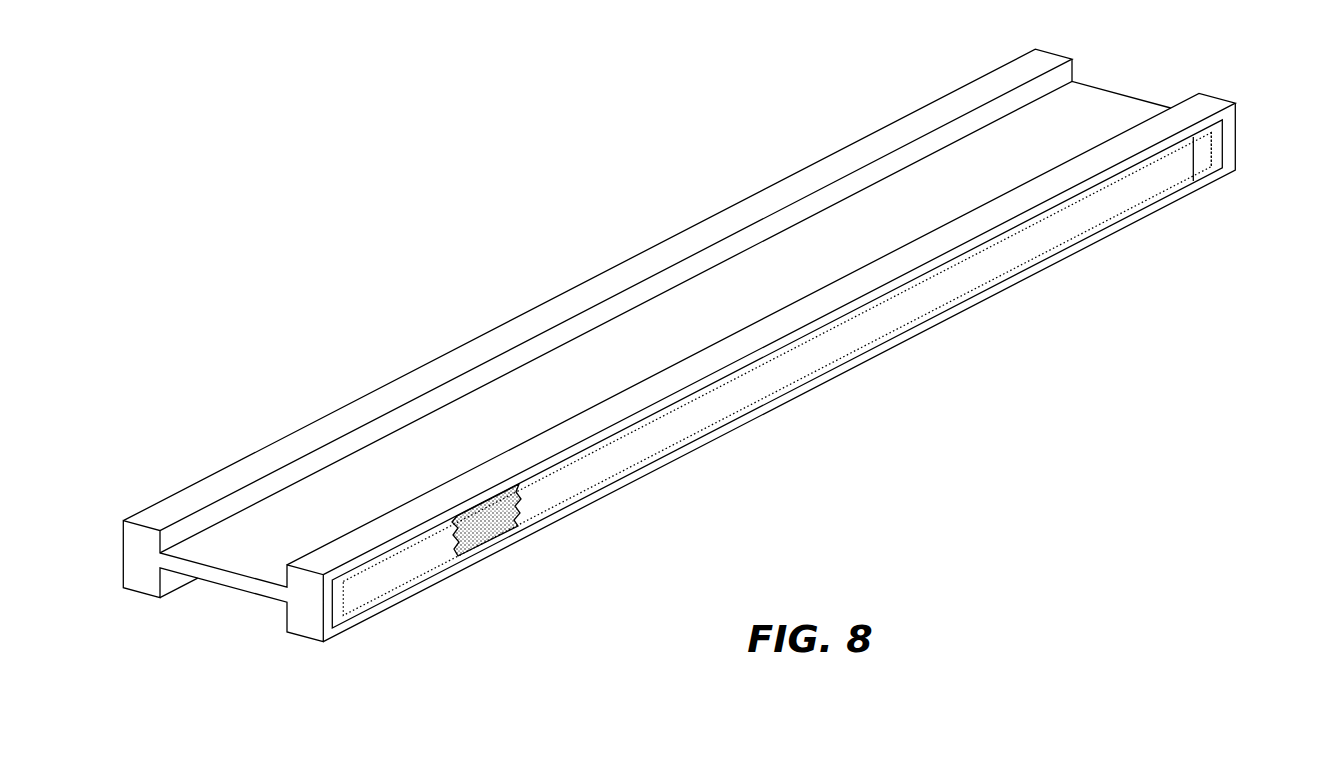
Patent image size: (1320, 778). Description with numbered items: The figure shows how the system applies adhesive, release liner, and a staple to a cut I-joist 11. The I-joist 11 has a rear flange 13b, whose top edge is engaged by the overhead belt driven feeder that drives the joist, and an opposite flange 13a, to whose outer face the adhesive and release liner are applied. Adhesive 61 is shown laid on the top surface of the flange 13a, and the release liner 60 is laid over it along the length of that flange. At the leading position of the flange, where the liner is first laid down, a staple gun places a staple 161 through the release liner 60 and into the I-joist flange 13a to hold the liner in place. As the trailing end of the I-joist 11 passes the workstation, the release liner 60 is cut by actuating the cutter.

The I-joist 11 is at (248, 553).
The flange 13a is at (327, 632).
The rear flange 13b is at (142, 573).
The release liner 60 is at (403, 571).
The adhesive 61 is at (483, 528).
The staple 161 is at (1196, 157).